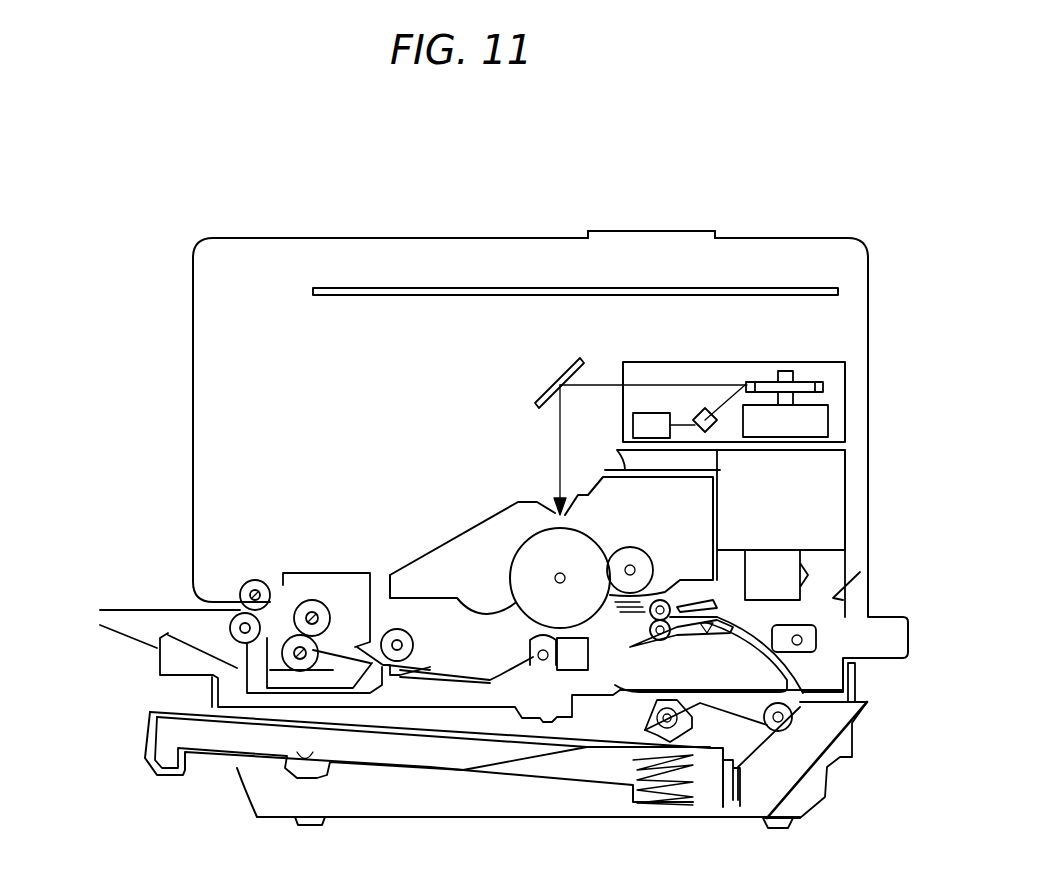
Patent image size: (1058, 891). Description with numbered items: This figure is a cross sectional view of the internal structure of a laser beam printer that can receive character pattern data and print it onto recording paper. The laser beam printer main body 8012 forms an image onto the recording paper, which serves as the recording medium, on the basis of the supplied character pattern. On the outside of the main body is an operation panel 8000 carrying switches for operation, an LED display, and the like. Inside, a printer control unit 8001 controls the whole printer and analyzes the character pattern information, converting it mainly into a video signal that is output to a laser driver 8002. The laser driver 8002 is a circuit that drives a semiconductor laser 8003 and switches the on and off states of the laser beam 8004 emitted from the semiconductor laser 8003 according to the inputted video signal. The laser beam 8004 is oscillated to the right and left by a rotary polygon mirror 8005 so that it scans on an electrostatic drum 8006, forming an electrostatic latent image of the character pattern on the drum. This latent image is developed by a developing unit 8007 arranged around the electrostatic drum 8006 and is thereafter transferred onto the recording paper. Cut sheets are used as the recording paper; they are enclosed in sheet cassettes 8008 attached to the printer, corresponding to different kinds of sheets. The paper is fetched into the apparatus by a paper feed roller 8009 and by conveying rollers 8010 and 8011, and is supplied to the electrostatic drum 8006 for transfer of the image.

The operation panel 8000 is at (678, 231).
The printer control unit 8001 is at (525, 290).
The laser driver 8002 is at (633, 422).
The semiconductor laser 8003 is at (712, 427).
The laser beam 8004 is at (680, 385).
The rotary polygon mirror 8005 is at (823, 384).
The electrostatic drum 8006 is at (533, 543).
The developing unit 8007 is at (438, 558).
The sheet cassette 8008 is at (150, 742).
The paper feed roller 8009 is at (645, 717).
The conveying roller 8010 is at (790, 718).
The conveying roller 8011 is at (673, 627).
The laser beam printer main body 8012 is at (788, 238).